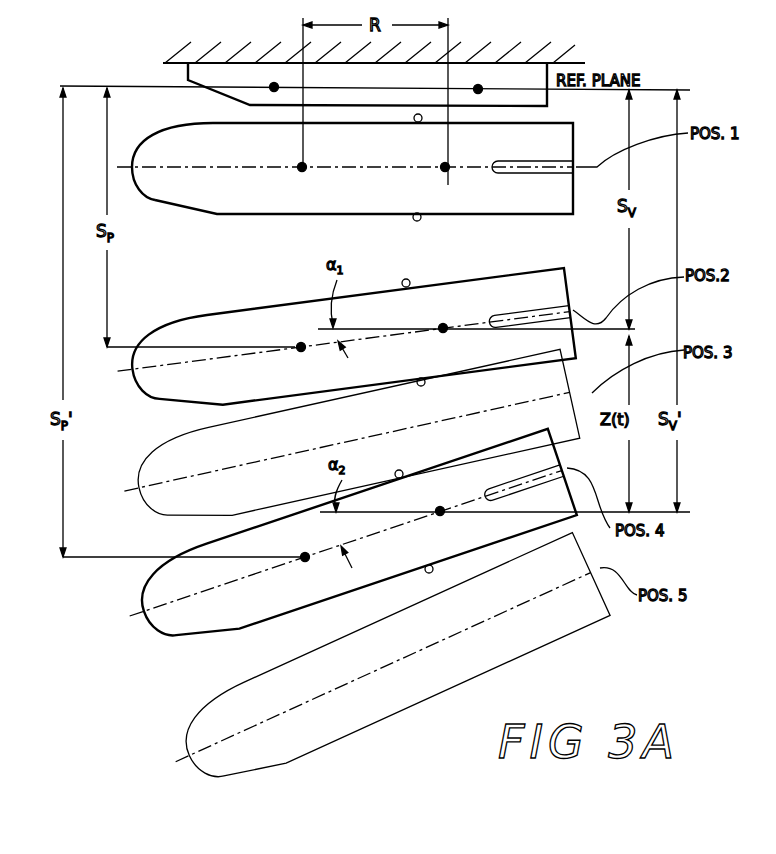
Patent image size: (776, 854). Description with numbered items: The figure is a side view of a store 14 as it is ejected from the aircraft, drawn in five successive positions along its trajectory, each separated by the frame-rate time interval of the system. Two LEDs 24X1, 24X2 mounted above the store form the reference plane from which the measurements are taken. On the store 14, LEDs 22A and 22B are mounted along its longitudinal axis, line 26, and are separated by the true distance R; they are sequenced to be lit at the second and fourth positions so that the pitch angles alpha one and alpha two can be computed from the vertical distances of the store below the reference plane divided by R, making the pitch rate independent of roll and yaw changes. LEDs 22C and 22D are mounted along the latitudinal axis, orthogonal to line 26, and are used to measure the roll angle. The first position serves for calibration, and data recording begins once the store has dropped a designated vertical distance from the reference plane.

The store 14 is at (226, 214).
The longitudinal axis line 26 is at (163, 167).
The LED target 22A is at (297, 375).
The LED target 22B is at (453, 352).
The LED target 22C is at (394, 290).
The LED target 22D is at (414, 405).
The reference LED 24X1 is at (274, 86).
The reference LED 24X2 is at (478, 88).